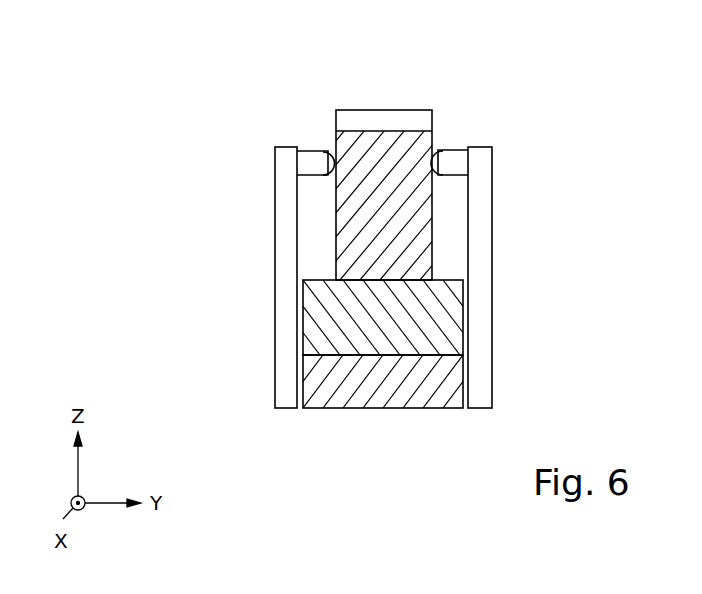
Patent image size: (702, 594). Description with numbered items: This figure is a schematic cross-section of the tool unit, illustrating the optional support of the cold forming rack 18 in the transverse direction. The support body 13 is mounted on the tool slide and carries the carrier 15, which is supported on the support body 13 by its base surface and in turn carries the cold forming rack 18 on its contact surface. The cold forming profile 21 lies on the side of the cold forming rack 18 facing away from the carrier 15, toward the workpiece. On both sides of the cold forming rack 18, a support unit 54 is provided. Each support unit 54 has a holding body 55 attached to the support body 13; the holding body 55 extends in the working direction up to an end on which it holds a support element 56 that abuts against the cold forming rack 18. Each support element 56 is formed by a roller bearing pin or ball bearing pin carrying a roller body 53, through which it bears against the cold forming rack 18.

The support body 13 is at (460, 382).
The carrier 15 is at (455, 320).
The cold forming rack 18 is at (482, 207).
The cold forming profile 21 is at (398, 118).
The roller body 53 is at (328, 163).
The support unit 54 is at (254, 108).
The holding body 55 is at (288, 255).
The support element 56 is at (311, 158).